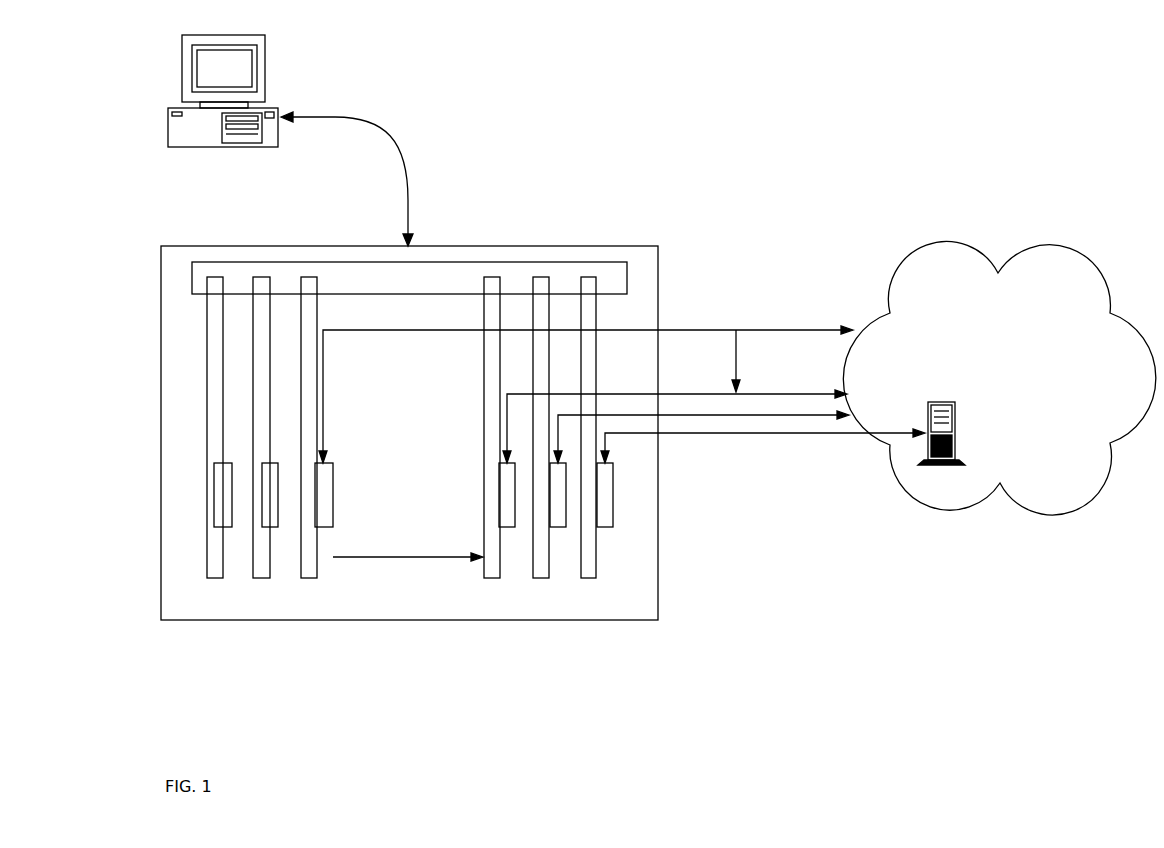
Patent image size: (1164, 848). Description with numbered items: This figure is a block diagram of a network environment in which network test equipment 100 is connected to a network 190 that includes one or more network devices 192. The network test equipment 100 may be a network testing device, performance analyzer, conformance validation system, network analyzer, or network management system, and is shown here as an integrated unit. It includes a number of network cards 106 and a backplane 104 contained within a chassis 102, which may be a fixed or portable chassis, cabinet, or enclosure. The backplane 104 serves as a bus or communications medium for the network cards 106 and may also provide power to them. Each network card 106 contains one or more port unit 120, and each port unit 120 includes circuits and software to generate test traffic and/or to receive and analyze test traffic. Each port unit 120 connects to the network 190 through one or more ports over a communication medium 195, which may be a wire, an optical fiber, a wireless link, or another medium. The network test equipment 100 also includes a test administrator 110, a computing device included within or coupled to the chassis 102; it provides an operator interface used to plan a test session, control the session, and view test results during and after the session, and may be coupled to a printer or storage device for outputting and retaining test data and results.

The network test equipment 100 is at (565, 52).
The chassis 102 is at (507, 247).
The backplane 104 is at (607, 262).
The network cards 106 is at (478, 502).
The test administrator 110 is at (223, 112).
The port unit 120 is at (602, 527).
The network 190 is at (999, 407).
The network device 192 is at (940, 463).
The communication medium 195 is at (700, 434).